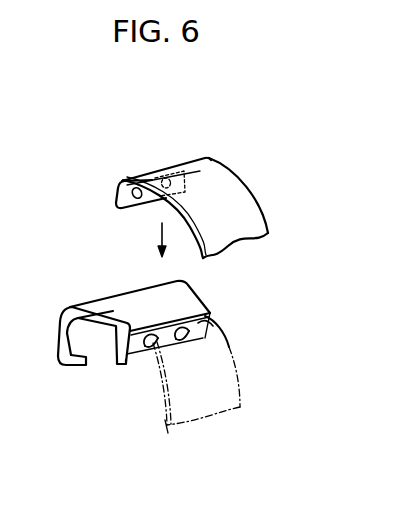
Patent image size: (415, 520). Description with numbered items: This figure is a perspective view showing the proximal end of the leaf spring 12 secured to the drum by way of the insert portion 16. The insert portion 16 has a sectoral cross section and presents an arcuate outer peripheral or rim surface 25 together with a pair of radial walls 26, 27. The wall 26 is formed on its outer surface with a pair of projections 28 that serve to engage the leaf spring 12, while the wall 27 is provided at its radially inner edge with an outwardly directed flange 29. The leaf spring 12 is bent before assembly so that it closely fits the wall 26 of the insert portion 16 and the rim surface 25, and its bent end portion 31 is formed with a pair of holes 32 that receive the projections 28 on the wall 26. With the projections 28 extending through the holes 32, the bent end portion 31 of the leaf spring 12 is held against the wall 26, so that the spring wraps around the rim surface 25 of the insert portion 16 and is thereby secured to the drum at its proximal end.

The leaf spring 12 is at (237, 185).
The insert portion 16 is at (212, 323).
The rim surface 25 is at (195, 298).
The wall 26 is at (112, 361).
The wall 27 is at (62, 334).
The projections 28 is at (192, 340).
The flange 29 is at (72, 364).
The bent end portion 31 is at (116, 197).
The holes 32 is at (168, 177).